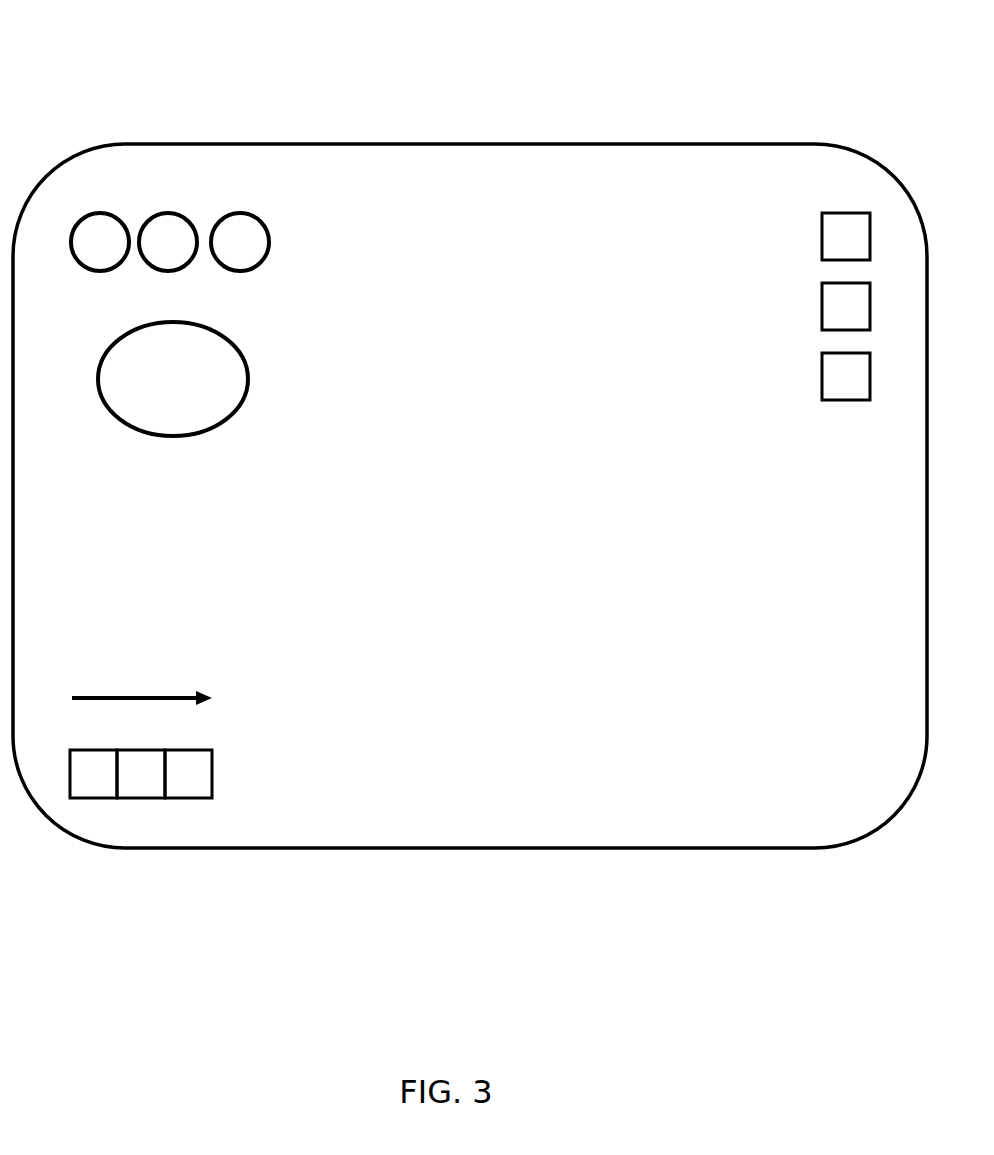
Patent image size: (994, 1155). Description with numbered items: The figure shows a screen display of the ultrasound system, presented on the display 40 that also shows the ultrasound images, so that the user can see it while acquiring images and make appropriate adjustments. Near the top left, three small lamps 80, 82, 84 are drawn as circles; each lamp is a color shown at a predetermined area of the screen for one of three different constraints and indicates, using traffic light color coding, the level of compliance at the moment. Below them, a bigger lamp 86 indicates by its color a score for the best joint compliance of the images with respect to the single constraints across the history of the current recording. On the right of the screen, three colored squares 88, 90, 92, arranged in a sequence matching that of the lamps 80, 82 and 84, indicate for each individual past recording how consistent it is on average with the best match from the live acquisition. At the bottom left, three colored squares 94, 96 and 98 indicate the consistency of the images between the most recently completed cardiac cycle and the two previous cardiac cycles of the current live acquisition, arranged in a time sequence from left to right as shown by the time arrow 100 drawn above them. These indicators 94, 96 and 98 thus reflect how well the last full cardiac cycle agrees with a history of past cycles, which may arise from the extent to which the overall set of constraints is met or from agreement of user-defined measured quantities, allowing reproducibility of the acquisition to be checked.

The display 40 is at (497, 136).
The small lamp 80 is at (81, 218).
The small lamp 82 is at (148, 222).
The small lamp 84 is at (262, 222).
The bigger lamp 86 is at (223, 422).
The colored square 88 is at (822, 257).
The colored square 90 is at (822, 328).
The colored square 92 is at (822, 373).
The colored square 94 is at (93, 798).
The colored square 96 is at (140, 798).
The colored square 98 is at (187, 798).
The time arrow 100 is at (119, 676).